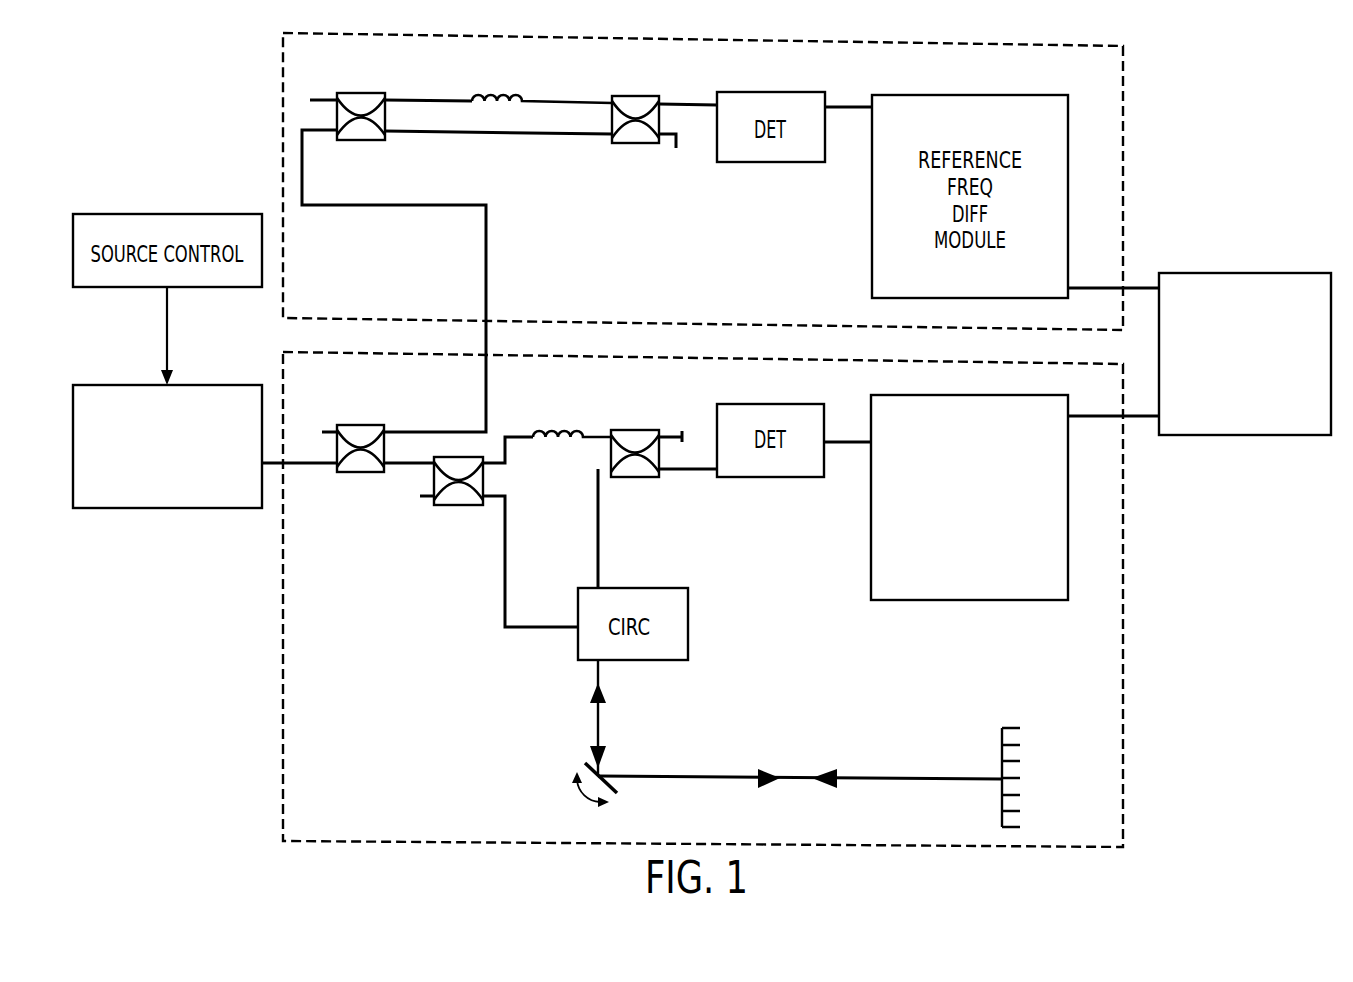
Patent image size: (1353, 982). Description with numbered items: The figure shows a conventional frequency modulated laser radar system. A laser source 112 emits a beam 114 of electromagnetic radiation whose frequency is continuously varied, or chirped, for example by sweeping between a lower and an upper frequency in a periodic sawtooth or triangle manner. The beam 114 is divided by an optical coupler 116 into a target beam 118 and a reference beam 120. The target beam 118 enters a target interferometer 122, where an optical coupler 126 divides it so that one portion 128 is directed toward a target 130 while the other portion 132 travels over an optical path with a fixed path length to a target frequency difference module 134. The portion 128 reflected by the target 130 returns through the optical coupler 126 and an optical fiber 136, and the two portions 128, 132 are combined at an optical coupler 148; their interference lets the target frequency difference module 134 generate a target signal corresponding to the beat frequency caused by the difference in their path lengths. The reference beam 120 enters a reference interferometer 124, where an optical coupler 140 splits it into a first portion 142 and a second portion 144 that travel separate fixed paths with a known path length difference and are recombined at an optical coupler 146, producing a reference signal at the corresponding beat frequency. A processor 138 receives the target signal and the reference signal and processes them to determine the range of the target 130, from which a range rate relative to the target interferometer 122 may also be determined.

The laser source 112 is at (160, 510).
The beam 114 is at (318, 467).
The optical coupler 116 is at (362, 425).
The target beam 118 is at (412, 470).
The reference beam 120 is at (485, 272).
The target interferometer 122 is at (1128, 628).
The reference interferometer 124 is at (1125, 152).
The optical coupler 126 is at (453, 507).
The portion of target beam 128 is at (595, 676).
The target 130 is at (1000, 732).
The portion of target beam 132 is at (557, 432).
The target frequency difference module 134 is at (870, 538).
The optical fiber 136 is at (600, 550).
The processor 138 is at (1238, 273).
The optical coupler 140 is at (362, 140).
The first portion of reference beam 142 is at (494, 93).
The second portion of reference beam 144 is at (497, 136).
The optical coupler 146 is at (633, 145).
The optical coupler 148 is at (638, 478).